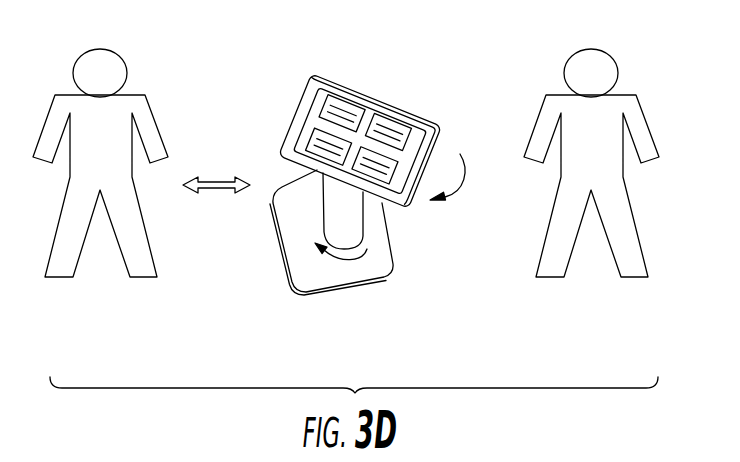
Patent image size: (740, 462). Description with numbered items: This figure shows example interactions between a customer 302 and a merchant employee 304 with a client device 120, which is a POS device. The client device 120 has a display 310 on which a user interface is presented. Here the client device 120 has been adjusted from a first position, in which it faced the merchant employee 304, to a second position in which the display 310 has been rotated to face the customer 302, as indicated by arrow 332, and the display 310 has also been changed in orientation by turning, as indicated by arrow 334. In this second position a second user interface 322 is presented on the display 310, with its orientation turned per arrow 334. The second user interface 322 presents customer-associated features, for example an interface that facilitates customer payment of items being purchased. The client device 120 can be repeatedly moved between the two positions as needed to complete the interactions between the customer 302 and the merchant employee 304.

The client device 120 is at (353, 52).
The customer 302 is at (83, 343).
The merchant employee 304 is at (573, 370).
The display 310 is at (303, 110).
The second user interface 322 is at (398, 120).
The arrow 332 is at (339, 263).
The arrow 334 is at (466, 174).